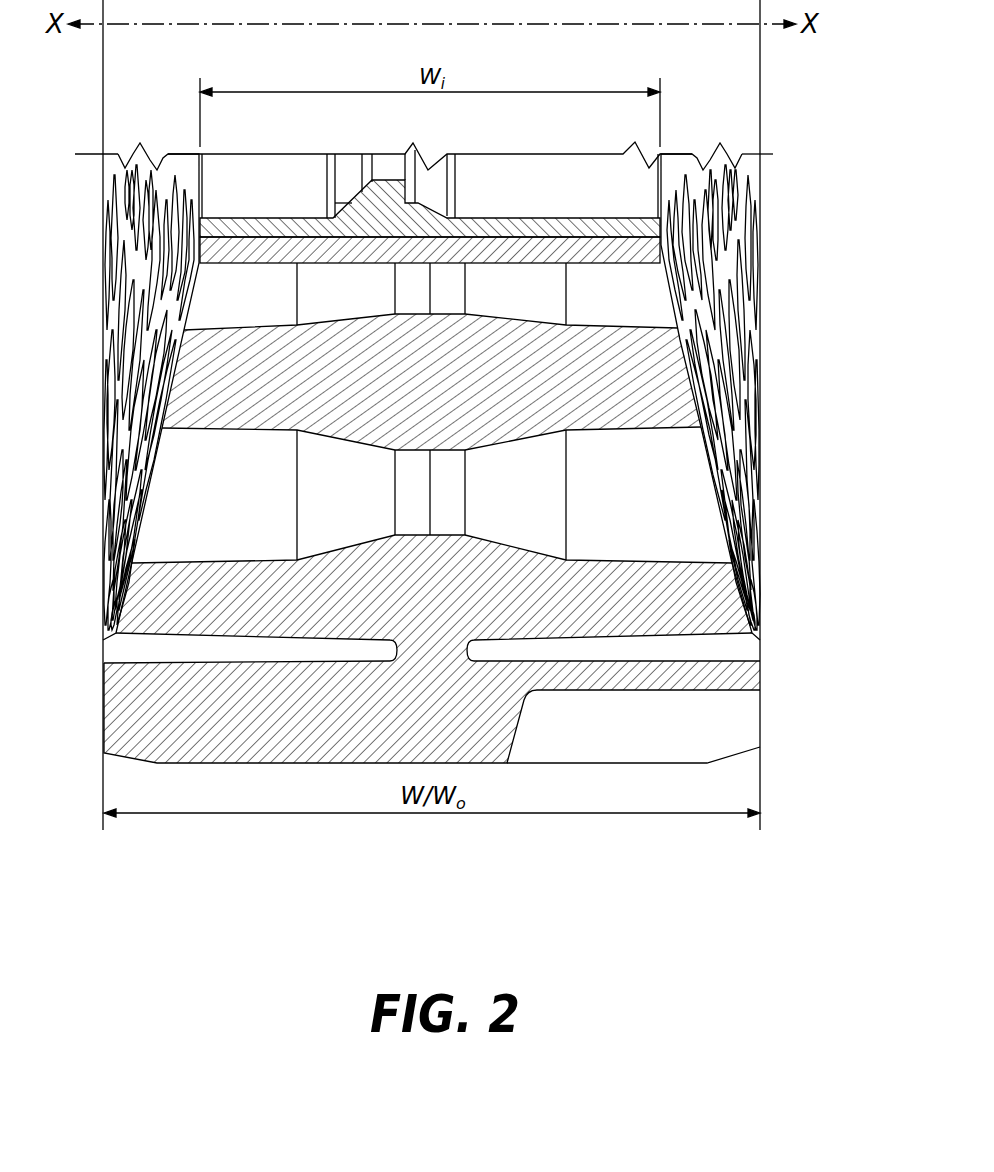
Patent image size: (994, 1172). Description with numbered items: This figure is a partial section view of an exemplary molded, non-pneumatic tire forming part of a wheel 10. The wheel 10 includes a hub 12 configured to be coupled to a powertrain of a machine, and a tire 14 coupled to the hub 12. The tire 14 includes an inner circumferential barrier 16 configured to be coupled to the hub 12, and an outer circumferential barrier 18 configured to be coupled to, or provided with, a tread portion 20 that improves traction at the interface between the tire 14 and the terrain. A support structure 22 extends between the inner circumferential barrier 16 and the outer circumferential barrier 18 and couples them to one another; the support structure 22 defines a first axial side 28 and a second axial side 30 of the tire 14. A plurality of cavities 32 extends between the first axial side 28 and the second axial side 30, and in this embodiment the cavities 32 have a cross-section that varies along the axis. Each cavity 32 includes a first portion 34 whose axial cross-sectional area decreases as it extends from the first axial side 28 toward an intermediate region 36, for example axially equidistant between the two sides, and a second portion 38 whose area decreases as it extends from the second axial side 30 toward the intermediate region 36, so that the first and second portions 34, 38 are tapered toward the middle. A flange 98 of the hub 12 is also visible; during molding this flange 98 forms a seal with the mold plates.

The wheel 10 is at (217, 774).
The hub 12 is at (258, 180).
The tire 14 is at (88, 405).
The inner circumferential barrier 16 is at (586, 250).
The outer circumferential barrier 18 is at (147, 700).
The tread portion 20 is at (603, 748).
The support structure 22 is at (212, 373).
The first axial side 28 is at (103, 545).
The second axial side 30 is at (758, 502).
The cavities 32 is at (235, 302).
The first portion 34 is at (222, 514).
The intermediate region 36 is at (537, 517).
The second portion 38 is at (667, 458).
The flange 98 is at (298, 226).